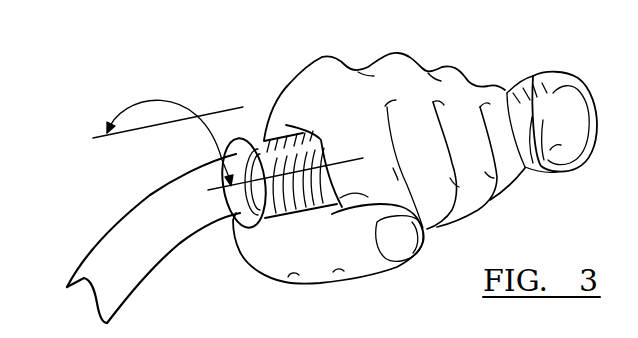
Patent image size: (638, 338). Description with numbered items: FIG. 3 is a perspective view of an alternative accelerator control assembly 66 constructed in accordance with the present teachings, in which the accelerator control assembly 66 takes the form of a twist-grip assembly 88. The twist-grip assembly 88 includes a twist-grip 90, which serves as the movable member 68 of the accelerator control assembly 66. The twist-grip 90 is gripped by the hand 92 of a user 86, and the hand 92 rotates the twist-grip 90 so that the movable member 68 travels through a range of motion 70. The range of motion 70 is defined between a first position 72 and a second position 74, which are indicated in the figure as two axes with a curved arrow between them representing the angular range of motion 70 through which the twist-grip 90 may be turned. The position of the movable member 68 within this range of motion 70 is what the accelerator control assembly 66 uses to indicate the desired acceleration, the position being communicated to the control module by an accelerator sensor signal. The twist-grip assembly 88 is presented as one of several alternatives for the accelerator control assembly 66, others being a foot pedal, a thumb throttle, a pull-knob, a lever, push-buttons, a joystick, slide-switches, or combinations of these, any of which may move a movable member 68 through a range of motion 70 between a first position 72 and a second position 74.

The accelerator control assembly 66 is at (106, 171).
The movable member 68 is at (550, 157).
The range of motion 70 is at (146, 91).
The first position 72 is at (271, 182).
The second position 74 is at (153, 131).
The user 86 is at (432, 57).
The twist-grip assembly 88 is at (274, 65).
The twist-grip 90 is at (553, 103).
The hand 92 is at (420, 109).